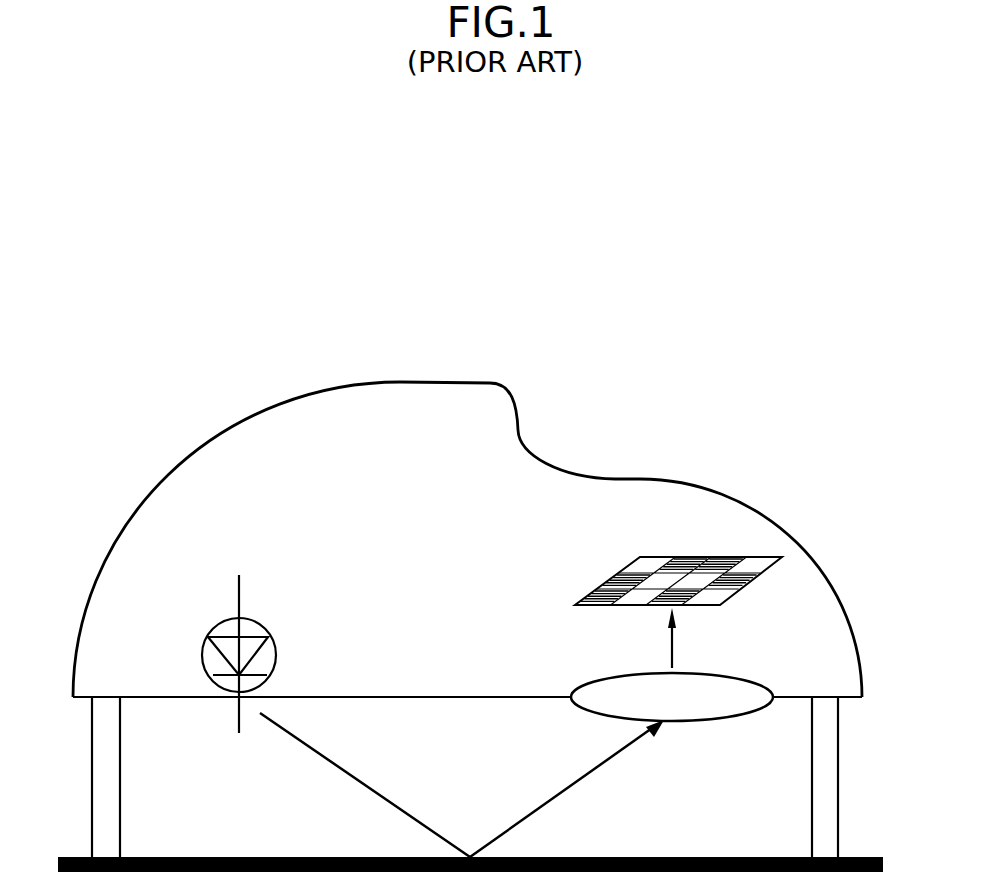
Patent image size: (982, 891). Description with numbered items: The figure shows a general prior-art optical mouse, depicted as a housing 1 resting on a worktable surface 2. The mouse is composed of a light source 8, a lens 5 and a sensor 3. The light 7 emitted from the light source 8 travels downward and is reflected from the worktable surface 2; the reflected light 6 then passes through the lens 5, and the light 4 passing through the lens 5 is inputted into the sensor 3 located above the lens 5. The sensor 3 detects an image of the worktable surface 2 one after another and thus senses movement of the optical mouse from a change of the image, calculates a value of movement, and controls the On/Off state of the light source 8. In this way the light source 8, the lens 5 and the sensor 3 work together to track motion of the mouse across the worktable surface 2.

The housing 1 is at (750, 507).
The worktable surface 2 is at (729, 857).
The sensor 3 is at (689, 557).
The light 4 is at (672, 648).
The lens 5 is at (721, 673).
The reflected light 6 is at (572, 785).
The light 7 is at (363, 783).
The light source 8 is at (277, 650).